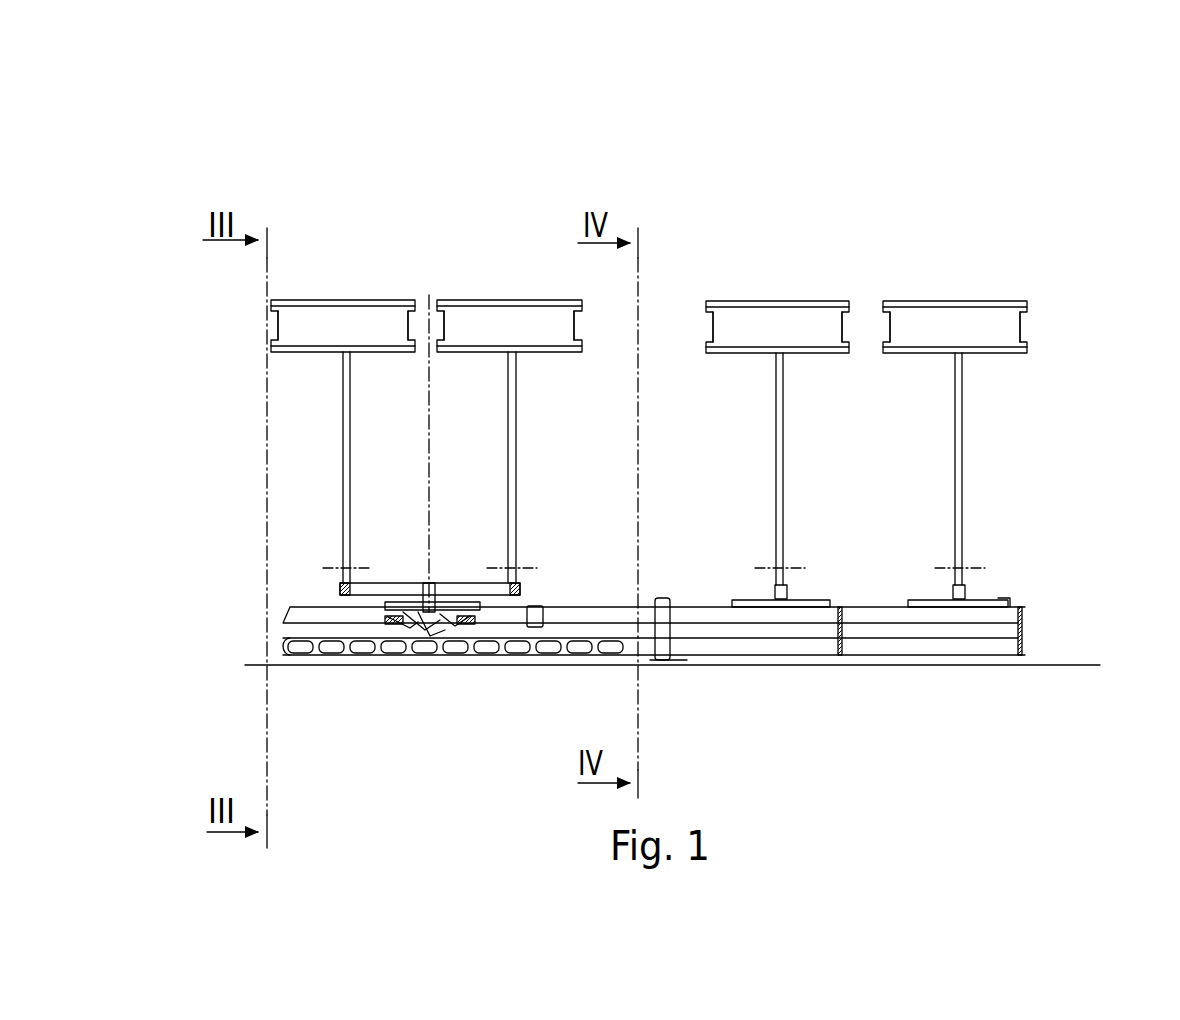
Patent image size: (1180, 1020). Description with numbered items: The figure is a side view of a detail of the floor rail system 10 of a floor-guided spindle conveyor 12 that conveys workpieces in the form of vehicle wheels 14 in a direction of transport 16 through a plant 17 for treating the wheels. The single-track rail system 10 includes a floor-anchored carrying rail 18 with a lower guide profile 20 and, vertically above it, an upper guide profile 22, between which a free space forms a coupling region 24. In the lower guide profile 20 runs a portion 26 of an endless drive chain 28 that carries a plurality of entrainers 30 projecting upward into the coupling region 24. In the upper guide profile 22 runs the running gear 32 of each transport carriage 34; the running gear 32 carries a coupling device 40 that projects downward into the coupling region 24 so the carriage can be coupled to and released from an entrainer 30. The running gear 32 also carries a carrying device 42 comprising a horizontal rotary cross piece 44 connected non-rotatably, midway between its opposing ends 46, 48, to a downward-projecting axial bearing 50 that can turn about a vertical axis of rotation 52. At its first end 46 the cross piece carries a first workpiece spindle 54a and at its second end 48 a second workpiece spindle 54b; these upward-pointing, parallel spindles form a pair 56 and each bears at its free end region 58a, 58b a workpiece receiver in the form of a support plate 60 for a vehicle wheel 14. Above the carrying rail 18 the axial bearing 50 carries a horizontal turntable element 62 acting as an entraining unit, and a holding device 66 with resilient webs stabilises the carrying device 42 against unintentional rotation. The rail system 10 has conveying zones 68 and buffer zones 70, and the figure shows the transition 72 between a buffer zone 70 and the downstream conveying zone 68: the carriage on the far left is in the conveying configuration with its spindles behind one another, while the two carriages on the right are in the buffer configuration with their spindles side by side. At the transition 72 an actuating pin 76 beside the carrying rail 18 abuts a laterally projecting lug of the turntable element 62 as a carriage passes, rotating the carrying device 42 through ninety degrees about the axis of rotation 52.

The floor rail system 10 is at (358, 676).
The floor-guided spindle conveyor 12 is at (311, 212).
The vehicle wheel 14 is at (695, 320).
The direction of transport 16 is at (635, 140).
The plant 17 is at (1044, 195).
The carrying rail 18 is at (966, 650).
The lower guide profile 20 is at (1025, 646).
The upper guide profile 22 is at (1022, 612).
The coupling region 24 is at (1036, 634).
The portion of the endless drive chain 26 is at (493, 652).
The endless drive chain 28 is at (303, 652).
The entrainer 30 is at (428, 624).
The running gear 32 is at (452, 590).
The transport carriage 34 is at (572, 573).
The coupling device 40 is at (392, 616).
The carrying device 42 is at (298, 565).
The rotary cross piece 44 is at (400, 585).
The first end 46 is at (586, 601).
The second end 48 is at (527, 588).
The axial bearing 50 is at (456, 618).
The axis of rotation 52 is at (428, 357).
The first workpiece spindle 54a is at (343, 447).
The second workpiece spindle 54b is at (513, 435).
The pair of workpiece spindles 56 is at (532, 395).
The free end region of first workpiece spindle 58a is at (343, 355).
The free end region of second workpiece spindle 58b is at (540, 353).
The support plate 60 is at (513, 352).
The turntable element 62 is at (350, 604).
The holding device 66 is at (400, 623).
The conveying zone 68 is at (376, 225).
The buffer zone 70 is at (894, 212).
The transition 72 is at (676, 678).
The actuating pin 76 is at (662, 661).